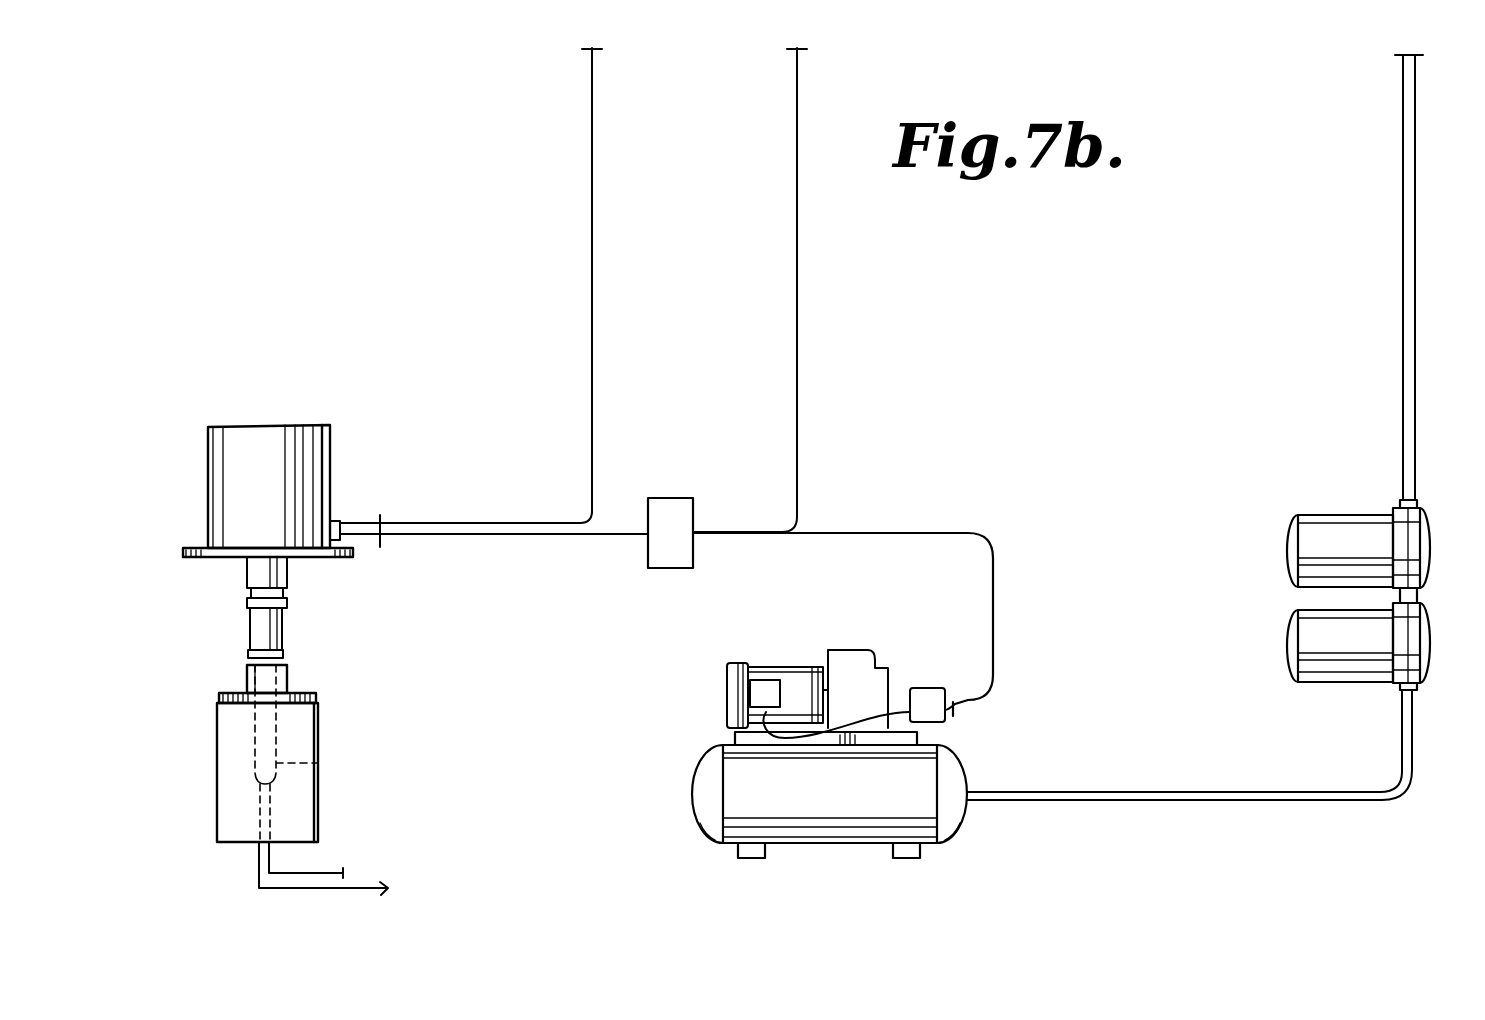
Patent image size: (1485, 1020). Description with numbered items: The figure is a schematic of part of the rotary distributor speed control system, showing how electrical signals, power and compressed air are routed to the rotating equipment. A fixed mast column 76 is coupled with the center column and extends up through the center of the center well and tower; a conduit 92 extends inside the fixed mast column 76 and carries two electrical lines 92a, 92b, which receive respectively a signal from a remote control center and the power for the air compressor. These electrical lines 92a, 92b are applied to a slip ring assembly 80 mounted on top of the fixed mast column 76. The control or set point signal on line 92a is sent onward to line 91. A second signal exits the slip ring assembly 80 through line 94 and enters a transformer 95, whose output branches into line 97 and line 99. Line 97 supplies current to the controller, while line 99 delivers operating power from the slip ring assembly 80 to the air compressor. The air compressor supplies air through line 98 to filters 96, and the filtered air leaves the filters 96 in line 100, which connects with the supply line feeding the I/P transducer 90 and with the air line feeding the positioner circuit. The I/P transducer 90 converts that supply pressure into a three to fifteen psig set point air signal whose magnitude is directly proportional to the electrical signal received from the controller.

The fixed mast column 76 is at (313, 698).
The slip ring assembly 80 is at (330, 460).
The I/P transducer 90 is at (840, 843).
The line 91 is at (591, 268).
The conduit 92 is at (318, 762).
The line 92a is at (259, 885).
The line 92b is at (343, 872).
The line 94 is at (538, 536).
The transformer 95 is at (693, 498).
The filters 96 is at (1298, 515).
The line 97 is at (798, 305).
The line 98 is at (1165, 800).
The line 99 is at (995, 604).
The line 100 is at (1403, 392).